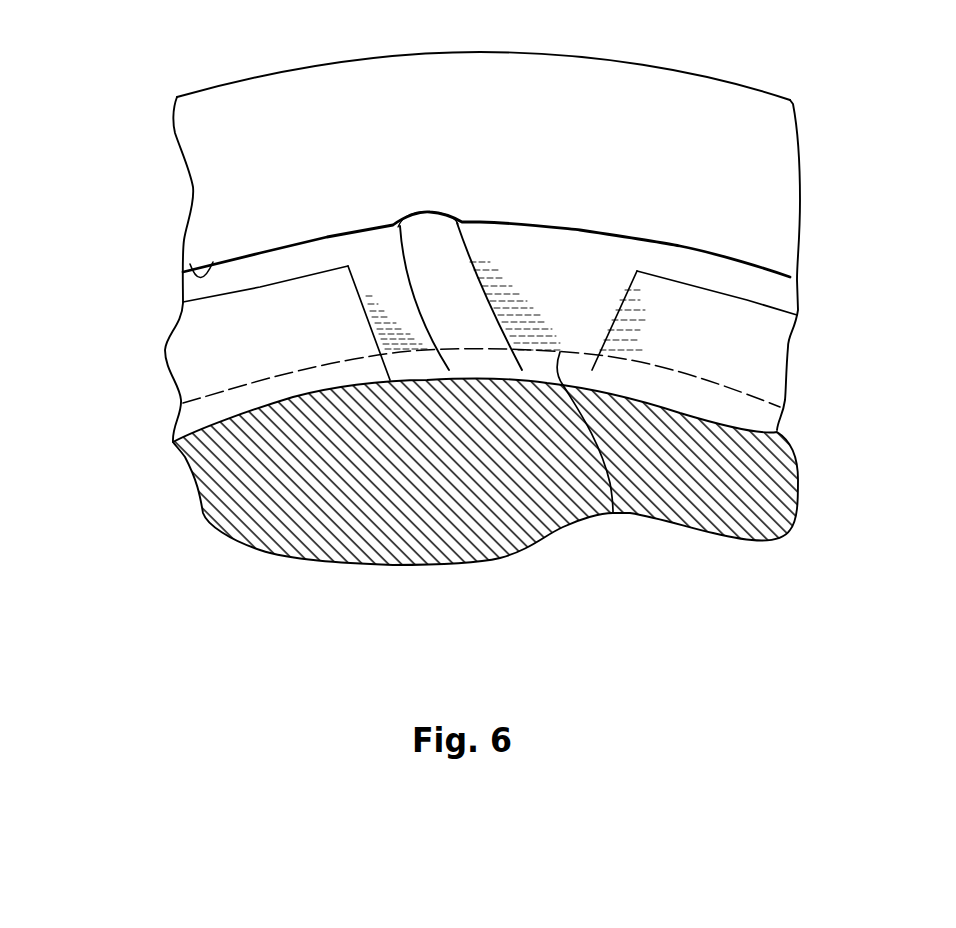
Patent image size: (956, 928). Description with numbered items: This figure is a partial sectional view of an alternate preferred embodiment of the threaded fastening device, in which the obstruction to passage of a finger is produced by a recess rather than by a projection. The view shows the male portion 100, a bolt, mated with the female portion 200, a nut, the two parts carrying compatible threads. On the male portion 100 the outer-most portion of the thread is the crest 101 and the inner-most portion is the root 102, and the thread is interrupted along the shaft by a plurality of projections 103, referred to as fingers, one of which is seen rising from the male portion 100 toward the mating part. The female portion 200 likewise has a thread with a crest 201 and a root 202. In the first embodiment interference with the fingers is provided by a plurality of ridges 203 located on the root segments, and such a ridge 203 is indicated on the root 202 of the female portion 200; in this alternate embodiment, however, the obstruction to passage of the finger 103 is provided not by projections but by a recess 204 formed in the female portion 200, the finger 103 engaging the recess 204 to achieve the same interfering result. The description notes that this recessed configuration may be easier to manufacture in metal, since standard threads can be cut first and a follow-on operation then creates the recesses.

The male portion 100 is at (677, 608).
The crest 101 is at (183, 300).
The root 102 is at (213, 437).
The projection 103 is at (410, 218).
The female portion 200 is at (168, 56).
The crest 201 is at (613, 513).
The root 202 is at (788, 276).
The ridge 203 is at (191, 265).
The recess 204 is at (455, 218).